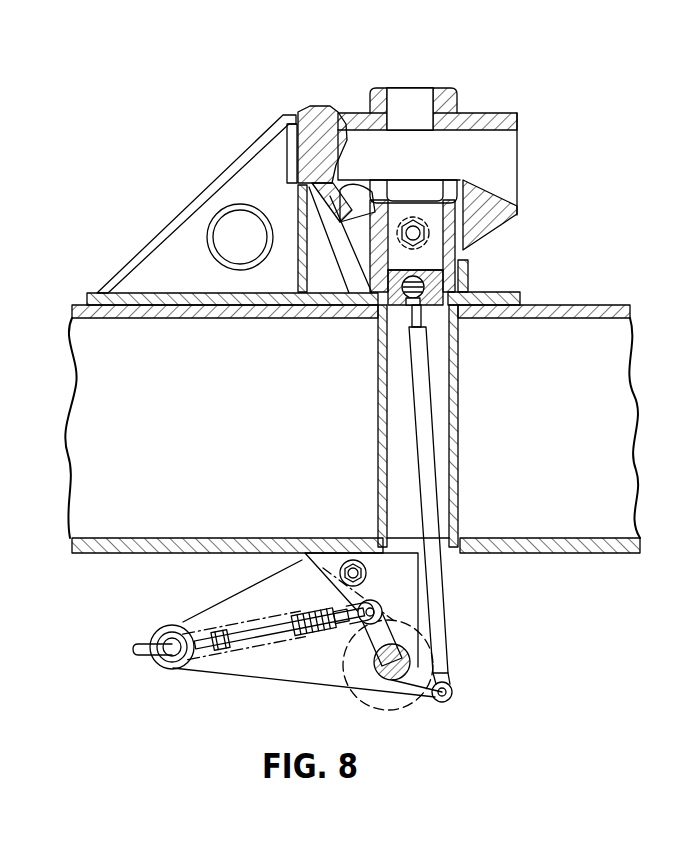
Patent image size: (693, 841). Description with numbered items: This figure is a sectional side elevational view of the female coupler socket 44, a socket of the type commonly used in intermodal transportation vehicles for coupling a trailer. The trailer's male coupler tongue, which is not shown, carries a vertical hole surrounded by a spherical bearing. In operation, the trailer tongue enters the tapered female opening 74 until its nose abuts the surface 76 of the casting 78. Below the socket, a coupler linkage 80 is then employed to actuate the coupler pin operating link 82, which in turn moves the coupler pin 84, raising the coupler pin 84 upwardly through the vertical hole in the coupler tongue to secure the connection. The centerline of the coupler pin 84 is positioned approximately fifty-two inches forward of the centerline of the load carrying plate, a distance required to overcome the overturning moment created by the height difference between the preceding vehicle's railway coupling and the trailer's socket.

The female coupler socket 44 is at (318, 78).
The tapered female opening 74 is at (508, 147).
The surface 76 is at (343, 140).
The casting 78 is at (320, 121).
The coupler linkage 80 is at (327, 683).
The coupler pin operating link 82 is at (440, 600).
The coupler pin 84 is at (430, 252).